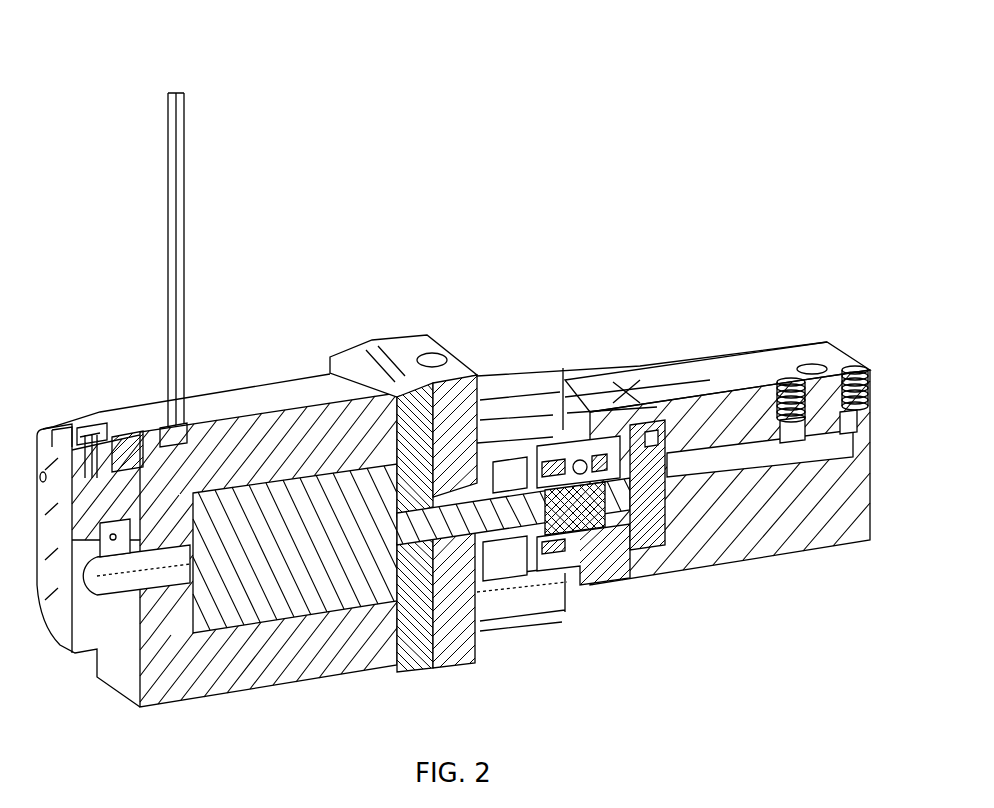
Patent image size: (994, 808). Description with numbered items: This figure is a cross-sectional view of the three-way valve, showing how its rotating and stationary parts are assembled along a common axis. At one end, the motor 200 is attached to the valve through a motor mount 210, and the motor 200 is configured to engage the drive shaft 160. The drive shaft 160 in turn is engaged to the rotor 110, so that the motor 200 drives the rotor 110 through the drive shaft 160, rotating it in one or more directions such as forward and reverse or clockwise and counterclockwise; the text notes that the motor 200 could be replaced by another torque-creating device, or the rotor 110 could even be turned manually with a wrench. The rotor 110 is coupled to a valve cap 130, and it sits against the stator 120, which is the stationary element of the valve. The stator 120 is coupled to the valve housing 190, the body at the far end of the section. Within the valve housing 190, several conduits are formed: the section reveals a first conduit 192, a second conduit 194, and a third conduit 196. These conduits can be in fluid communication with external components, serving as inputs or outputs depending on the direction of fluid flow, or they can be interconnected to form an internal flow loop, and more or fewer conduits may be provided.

The rotor 110 is at (623, 520).
The stator 120 is at (652, 462).
The valve cap 130 is at (553, 448).
The drive shaft 160 is at (582, 560).
The valve housing 190 is at (744, 415).
The first conduit 192 is at (833, 372).
The second conduit 194 is at (805, 466).
The third conduit 196 is at (813, 372).
The motor 200 is at (112, 408).
The motor mount 210 is at (410, 350).